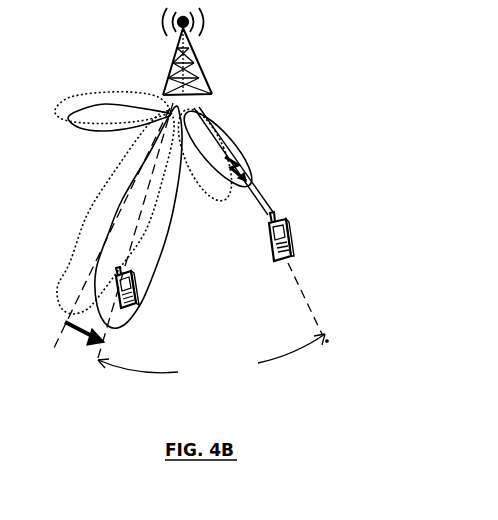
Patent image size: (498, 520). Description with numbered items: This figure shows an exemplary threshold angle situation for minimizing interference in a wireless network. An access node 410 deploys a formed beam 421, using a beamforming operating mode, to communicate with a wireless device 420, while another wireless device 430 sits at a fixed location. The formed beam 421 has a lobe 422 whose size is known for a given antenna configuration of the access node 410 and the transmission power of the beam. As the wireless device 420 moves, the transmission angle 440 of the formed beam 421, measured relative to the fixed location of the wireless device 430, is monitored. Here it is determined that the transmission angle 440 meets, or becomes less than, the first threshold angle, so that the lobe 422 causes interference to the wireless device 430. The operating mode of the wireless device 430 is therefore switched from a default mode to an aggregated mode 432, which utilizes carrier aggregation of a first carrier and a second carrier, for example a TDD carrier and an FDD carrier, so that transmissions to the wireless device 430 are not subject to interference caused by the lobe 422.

The access node 410 is at (166, 80).
The wireless device 420 is at (117, 276).
The formed beam 421 is at (168, 236).
The lobe 422 is at (238, 192).
The wireless device 430 is at (290, 229).
The aggregated mode 432 is at (250, 165).
The transmission angle 440 is at (182, 400).